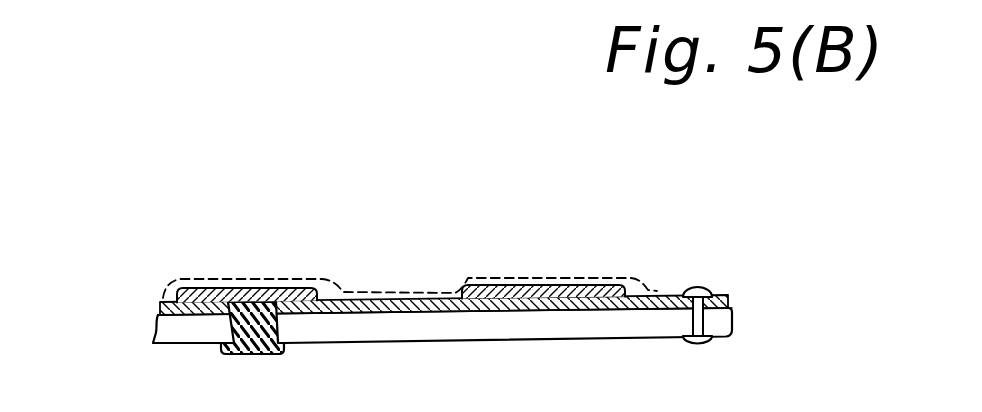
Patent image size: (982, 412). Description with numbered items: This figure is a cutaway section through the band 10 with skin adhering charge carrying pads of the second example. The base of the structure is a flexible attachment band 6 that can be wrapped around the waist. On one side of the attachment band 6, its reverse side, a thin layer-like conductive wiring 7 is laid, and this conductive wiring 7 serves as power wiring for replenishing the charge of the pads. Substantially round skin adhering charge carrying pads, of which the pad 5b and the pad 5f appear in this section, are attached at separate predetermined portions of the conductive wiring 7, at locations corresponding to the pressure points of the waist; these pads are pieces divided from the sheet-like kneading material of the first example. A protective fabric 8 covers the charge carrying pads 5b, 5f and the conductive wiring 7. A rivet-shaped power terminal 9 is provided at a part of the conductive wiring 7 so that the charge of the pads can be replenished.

The band with skin adhering charge carrying pads 10 is at (158, 212).
The skin adhering charge carrying pad 5b is at (246, 292).
The skin adhering charge carrying pad 5f is at (542, 283).
The attachment band 6 is at (472, 332).
The conductive wiring 7 is at (383, 313).
The protective fabric 8 is at (486, 278).
The power terminal 9 is at (698, 287).